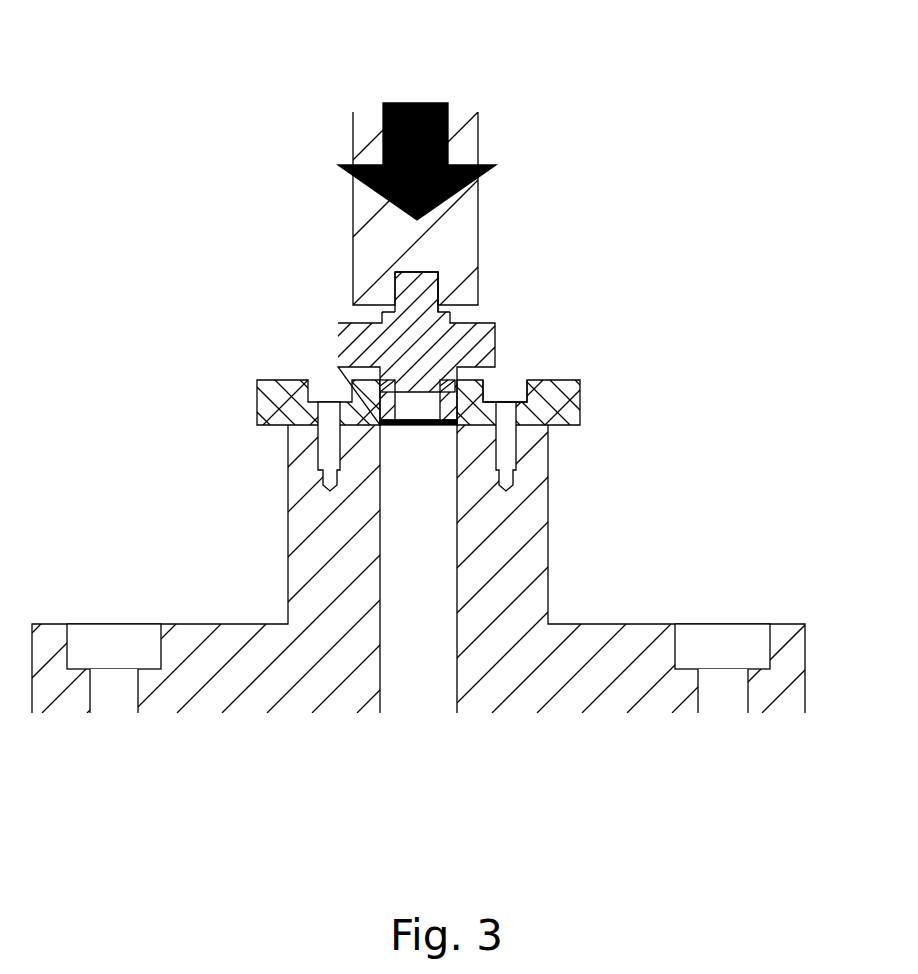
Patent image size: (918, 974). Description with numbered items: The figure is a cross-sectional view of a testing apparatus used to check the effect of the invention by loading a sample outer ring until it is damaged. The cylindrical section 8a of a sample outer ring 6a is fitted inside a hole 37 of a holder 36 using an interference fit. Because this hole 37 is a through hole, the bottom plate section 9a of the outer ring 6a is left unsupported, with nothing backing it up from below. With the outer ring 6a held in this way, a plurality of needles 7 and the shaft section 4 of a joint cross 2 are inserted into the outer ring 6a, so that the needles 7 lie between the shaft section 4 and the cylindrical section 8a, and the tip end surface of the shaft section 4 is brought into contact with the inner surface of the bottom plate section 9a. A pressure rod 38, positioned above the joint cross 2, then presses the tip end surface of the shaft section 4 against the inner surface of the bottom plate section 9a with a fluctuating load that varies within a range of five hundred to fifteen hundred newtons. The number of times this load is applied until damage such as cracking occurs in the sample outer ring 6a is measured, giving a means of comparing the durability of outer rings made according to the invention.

The joint cross 2 is at (338, 328).
The shaft section 4 is at (407, 387).
The sample outer ring 6a is at (452, 388).
The cylindrical section 8a is at (487, 398).
The needles 7 is at (385, 422).
The bottom plate section 9a is at (418, 425).
The holder 36 is at (580, 400).
The hole 37 is at (385, 425).
The pressure rod 38 is at (465, 145).